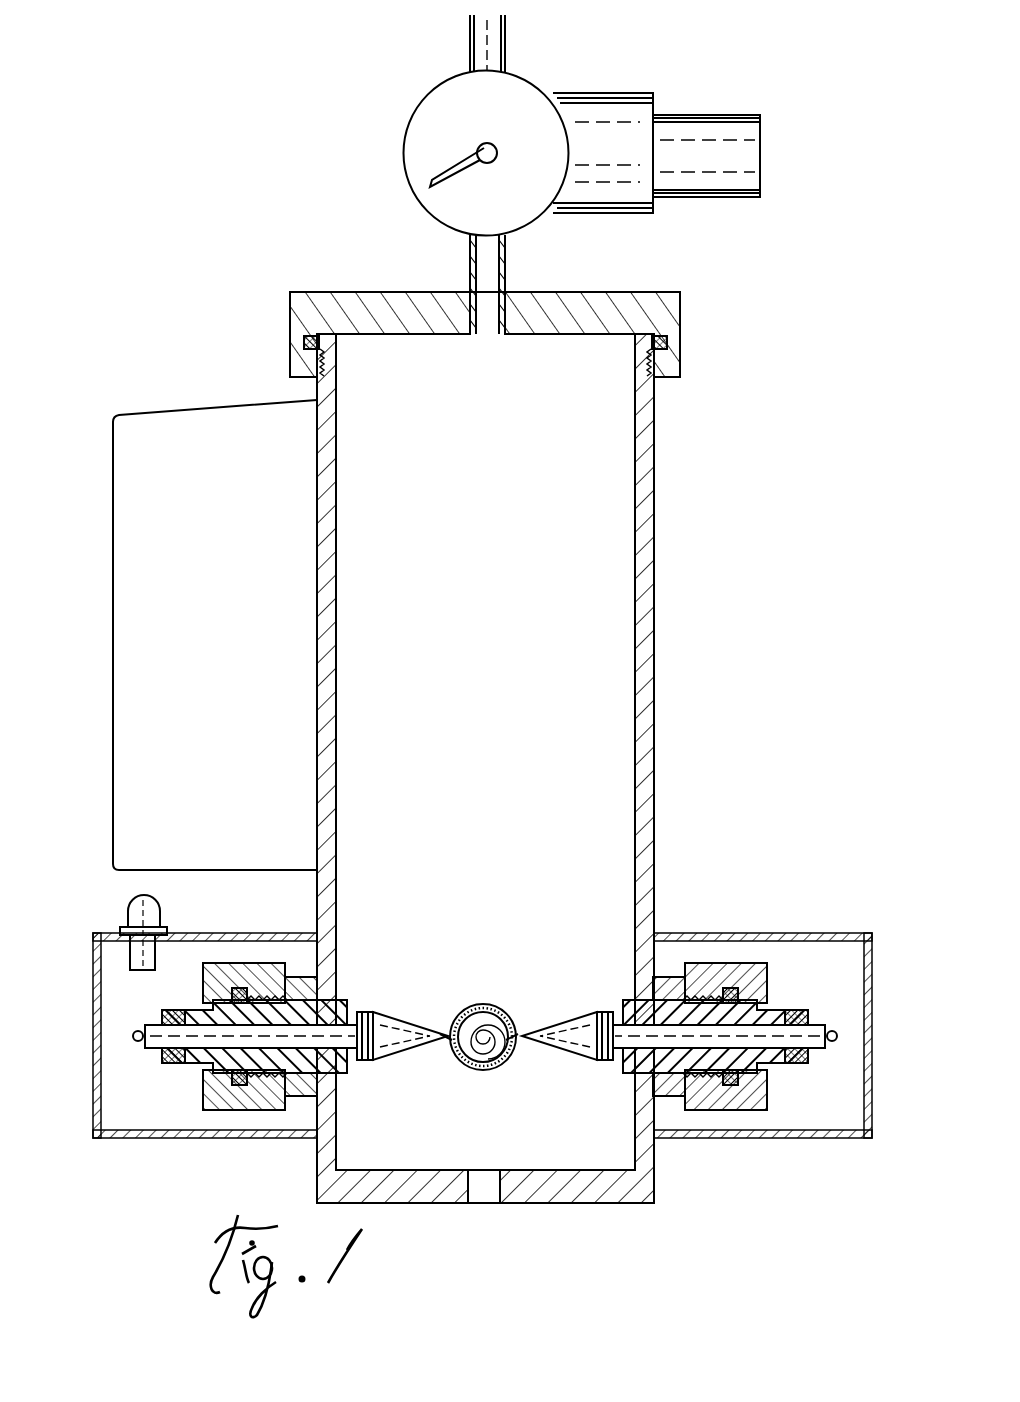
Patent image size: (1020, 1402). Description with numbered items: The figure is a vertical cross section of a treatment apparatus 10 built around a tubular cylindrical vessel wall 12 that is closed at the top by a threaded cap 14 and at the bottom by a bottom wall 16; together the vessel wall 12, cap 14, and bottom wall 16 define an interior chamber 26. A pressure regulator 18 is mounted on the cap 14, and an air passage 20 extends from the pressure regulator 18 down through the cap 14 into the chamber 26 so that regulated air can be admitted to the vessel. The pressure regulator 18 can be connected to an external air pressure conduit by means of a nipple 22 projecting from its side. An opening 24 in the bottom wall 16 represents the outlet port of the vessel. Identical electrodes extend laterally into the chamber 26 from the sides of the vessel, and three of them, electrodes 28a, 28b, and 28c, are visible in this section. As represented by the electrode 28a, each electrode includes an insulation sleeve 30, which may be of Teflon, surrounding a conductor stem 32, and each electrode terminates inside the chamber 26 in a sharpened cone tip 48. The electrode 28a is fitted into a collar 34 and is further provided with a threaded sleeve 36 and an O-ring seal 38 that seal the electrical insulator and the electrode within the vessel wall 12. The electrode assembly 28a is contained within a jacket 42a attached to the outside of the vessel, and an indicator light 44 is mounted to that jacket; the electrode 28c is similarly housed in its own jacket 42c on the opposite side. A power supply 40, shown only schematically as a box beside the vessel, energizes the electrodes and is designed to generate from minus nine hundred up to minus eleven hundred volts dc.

The treatment apparatus 10 is at (747, 378).
The tubular cylindrical vessel wall 12 is at (647, 557).
The threaded cap 14 is at (612, 292).
The bottom wall 16 is at (560, 1193).
The pressure regulator 18 is at (413, 118).
The air passage 20 is at (478, 256).
The nipple 22 is at (708, 125).
The opening 24 is at (475, 1187).
The chamber 26 is at (650, 660).
The electrode 28a is at (390, 1010).
The electrode 28b is at (477, 1012).
The electrode 28c is at (570, 1012).
The insulation sleeve 30 is at (275, 1060).
The conductor stem 32 is at (158, 1038).
The collar 34 is at (272, 990).
The threaded sleeve 36 is at (203, 983).
The O-ring seal 38 is at (235, 985).
The power supply 40 is at (163, 430).
The jacket 42a is at (95, 1120).
The jacket 42c is at (866, 1097).
The indicator light 44 is at (142, 902).
The sharpened cone tip 48 is at (483, 1043).